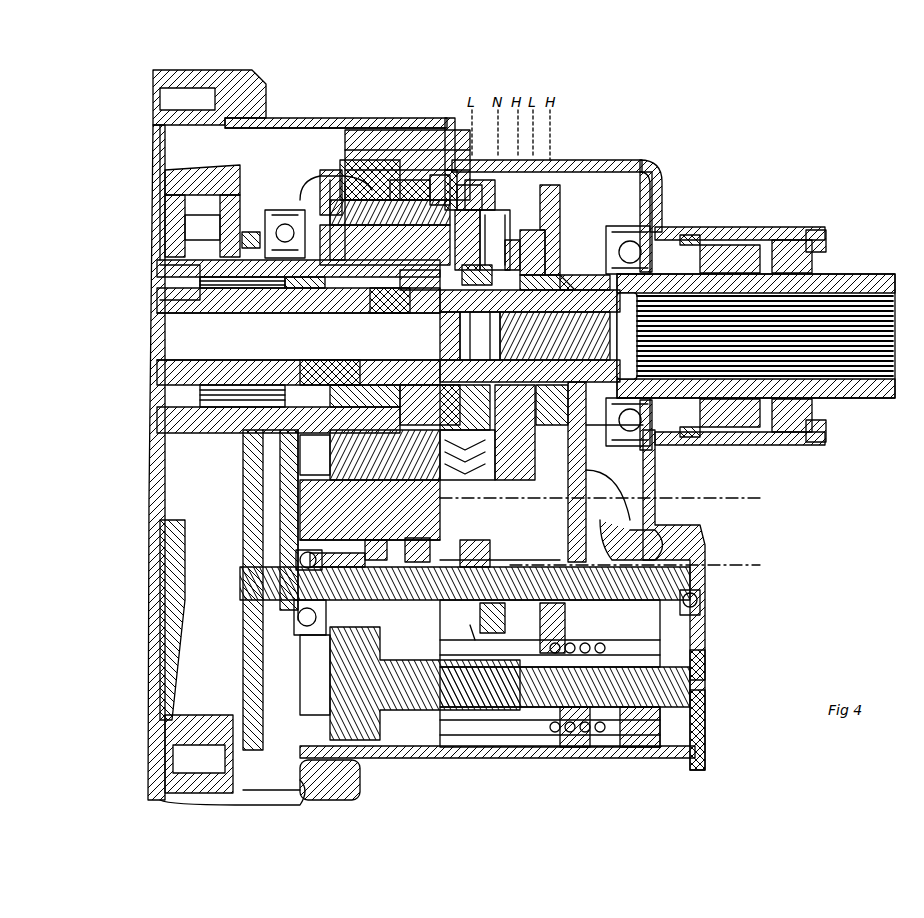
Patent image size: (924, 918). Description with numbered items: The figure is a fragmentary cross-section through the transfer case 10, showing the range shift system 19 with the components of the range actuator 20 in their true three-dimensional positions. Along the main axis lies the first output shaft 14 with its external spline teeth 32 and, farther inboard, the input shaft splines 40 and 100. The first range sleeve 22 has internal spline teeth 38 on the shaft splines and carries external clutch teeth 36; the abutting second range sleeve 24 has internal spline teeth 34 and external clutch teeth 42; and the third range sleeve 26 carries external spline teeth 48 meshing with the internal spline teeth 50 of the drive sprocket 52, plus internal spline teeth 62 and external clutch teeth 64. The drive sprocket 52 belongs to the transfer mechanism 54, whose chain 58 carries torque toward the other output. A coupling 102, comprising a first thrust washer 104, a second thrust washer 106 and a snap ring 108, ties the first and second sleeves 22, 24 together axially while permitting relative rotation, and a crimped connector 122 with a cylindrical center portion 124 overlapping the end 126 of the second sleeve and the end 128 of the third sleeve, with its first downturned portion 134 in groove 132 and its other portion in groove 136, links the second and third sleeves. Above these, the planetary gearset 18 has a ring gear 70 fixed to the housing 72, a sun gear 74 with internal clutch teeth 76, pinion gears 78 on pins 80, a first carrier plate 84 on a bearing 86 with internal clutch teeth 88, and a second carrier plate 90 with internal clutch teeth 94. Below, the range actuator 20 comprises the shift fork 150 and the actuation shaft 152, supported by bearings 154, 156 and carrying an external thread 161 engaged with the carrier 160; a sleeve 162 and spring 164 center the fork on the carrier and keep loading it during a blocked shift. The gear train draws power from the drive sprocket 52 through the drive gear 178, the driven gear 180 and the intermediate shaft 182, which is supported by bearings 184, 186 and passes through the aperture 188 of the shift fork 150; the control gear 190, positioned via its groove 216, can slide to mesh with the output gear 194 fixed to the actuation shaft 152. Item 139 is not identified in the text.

The transfer case 10 is at (719, 97).
The first output shaft 14 is at (868, 274).
The planetary gearset 18 is at (360, 130).
The range shift system 19 is at (474, 640).
The range actuator 20 is at (423, 732).
The first range sleeve 22 is at (560, 225).
The second range sleeve 24 is at (490, 300).
The third range sleeve 26 is at (270, 288).
The external spline teeth 32 is at (495, 240).
The internal spline teeth 34 is at (472, 270).
The external clutch teeth 36 is at (555, 200).
The internal spline teeth 38 is at (578, 275).
The external spline teeth 40 is at (392, 290).
The external clutch teeth 42 is at (506, 262).
The external spline teeth 48 is at (272, 215).
The internal spline teeth 50 is at (228, 313).
The drive sprocket 52 is at (198, 480).
The transfer mechanism 54 is at (235, 162).
The chain 58 is at (200, 170).
The internal spline teeth 62 is at (418, 290).
The external clutch teeth 64 is at (390, 212).
The ring gear 70 is at (355, 160).
The housing 72 is at (290, 118).
The sun gear 74 is at (340, 290).
The internal clutch teeth 76 is at (395, 180).
The pinion gears 78 is at (440, 175).
The pins 80 is at (332, 180).
The first carrier plate 84 is at (330, 170).
The bearing 86 is at (300, 200).
The internal clutch teeth 88 is at (300, 313).
The second carrier plate 90 is at (460, 185).
The internal clutch teeth 94 is at (475, 210).
The external spline teeth 100 is at (432, 385).
The coupling 102 is at (532, 222).
The first thrust washer 104 is at (580, 290).
The second thrust washer 106 is at (535, 290).
The snap ring 108 is at (555, 336).
The connector 122 is at (370, 485).
The cylindrically shaped center portion 124 is at (487, 432).
The end 126 is at (452, 170).
The end 128 is at (385, 234).
The groove 132 is at (469, 240).
The first downturned portion 134 is at (480, 336).
The groove 136 is at (360, 325).
The ring 139 is at (443, 336).
The shift fork 150 is at (580, 475).
The actuation shaft 152 is at (705, 700).
The bearing 154 is at (300, 620).
The bearing 156 is at (700, 665).
The carrier 160 is at (645, 747).
The external thread 161 is at (598, 648).
The sleeve 162 is at (520, 730).
The spring 164 is at (578, 747).
The drive gear 178 is at (250, 232).
The driven gear 180 is at (250, 790).
The intermediate shaft 182 is at (528, 567).
The bearing 184 is at (300, 560).
The bearing 186 is at (698, 603).
The aperture 188 is at (590, 575).
The control gear 190 is at (352, 570).
The output gear 194 is at (358, 740).
The groove 216 is at (430, 540).